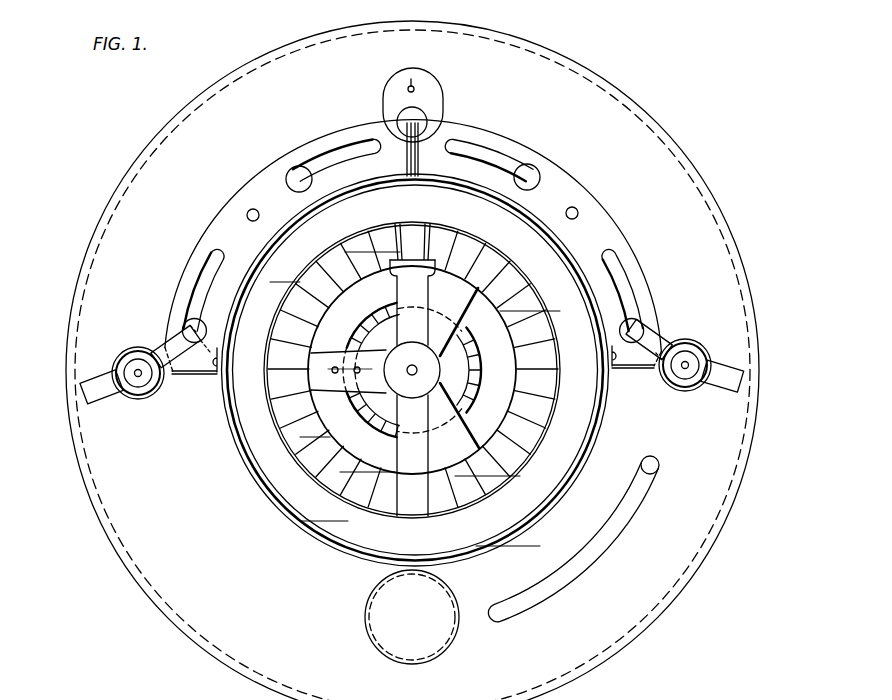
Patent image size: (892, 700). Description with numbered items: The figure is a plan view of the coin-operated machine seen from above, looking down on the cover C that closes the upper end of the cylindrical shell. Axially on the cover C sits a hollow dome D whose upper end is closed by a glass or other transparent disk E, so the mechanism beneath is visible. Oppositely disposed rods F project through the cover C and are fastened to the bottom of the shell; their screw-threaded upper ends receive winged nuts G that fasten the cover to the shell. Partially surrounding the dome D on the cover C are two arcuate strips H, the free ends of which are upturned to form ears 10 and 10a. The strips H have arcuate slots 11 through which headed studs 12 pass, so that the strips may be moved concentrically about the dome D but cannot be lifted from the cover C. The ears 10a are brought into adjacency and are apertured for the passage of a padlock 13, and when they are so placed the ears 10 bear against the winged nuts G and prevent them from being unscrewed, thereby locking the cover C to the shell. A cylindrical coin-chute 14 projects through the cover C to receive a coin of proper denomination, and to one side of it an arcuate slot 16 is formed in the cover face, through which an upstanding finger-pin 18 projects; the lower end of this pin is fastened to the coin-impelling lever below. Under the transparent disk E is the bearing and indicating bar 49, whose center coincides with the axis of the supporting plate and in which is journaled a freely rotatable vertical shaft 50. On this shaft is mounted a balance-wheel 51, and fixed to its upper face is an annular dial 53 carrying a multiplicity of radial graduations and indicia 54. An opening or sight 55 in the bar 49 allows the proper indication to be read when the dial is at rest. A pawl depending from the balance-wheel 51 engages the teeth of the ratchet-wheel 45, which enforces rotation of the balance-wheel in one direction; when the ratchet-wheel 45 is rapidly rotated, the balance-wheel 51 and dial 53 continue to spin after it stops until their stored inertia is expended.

The cover C is at (199, 123).
The hollow dome D is at (265, 511).
The transparent disk E is at (412, 370).
The rods F is at (141, 360).
The winged nuts G is at (117, 406).
The arcuate strips H is at (218, 236).
The ears 10 is at (200, 383).
The ears 10a is at (430, 160).
The arcuate slots 11 is at (338, 155).
The headed studs 12 is at (299, 169).
The padlock 13 is at (432, 92).
The coin-chute 14 is at (412, 617).
The arcuate slot 16 is at (612, 545).
The finger-pin 18 is at (666, 470).
The ratchet-wheel 45 is at (367, 311).
The bearing and indicating bar 49 is at (412, 388).
The vertical shaft 50 is at (416, 384).
The balance-wheel 51 is at (458, 294).
The annular dial 53 is at (494, 426).
The graduations and indicia 54 is at (490, 262).
The sight 55 is at (412, 229).